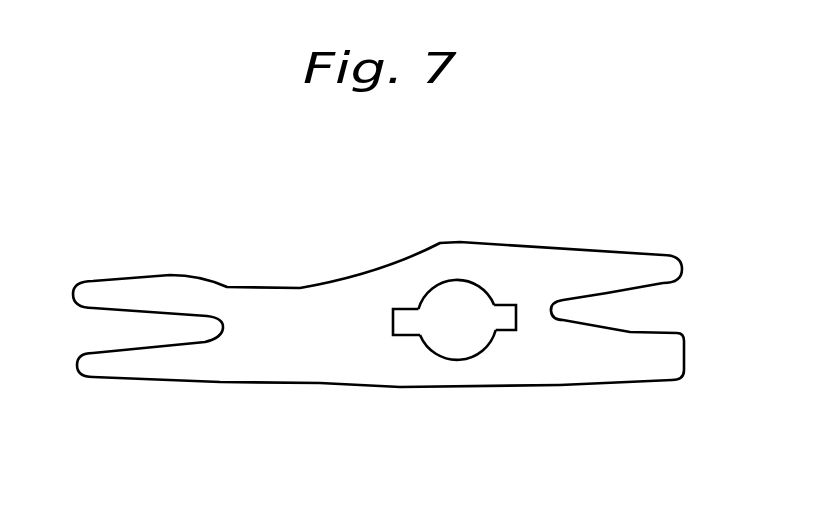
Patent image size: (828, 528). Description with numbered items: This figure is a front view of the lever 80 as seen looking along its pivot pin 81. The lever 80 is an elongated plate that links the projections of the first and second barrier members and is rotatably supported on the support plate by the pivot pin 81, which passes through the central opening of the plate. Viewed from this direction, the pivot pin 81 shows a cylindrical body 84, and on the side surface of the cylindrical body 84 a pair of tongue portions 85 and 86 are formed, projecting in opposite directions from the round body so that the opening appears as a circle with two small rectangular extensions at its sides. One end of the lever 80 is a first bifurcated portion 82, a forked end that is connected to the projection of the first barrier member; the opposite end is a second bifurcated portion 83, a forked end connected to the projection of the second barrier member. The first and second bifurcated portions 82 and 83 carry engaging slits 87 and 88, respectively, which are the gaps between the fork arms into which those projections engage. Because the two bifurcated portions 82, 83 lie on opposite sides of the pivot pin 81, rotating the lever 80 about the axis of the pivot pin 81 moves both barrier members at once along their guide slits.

The lever 80 is at (353, 252).
The pivot pin 81 is at (465, 264).
The first bifurcated portion 82 is at (635, 390).
The second bifurcated portion 83 is at (126, 385).
The cylindrical body 84 is at (460, 353).
The tongue portion 85 is at (507, 324).
The tongue portion 86 is at (407, 328).
The engaging slit 87 is at (613, 290).
The engaging slit 88 is at (158, 310).